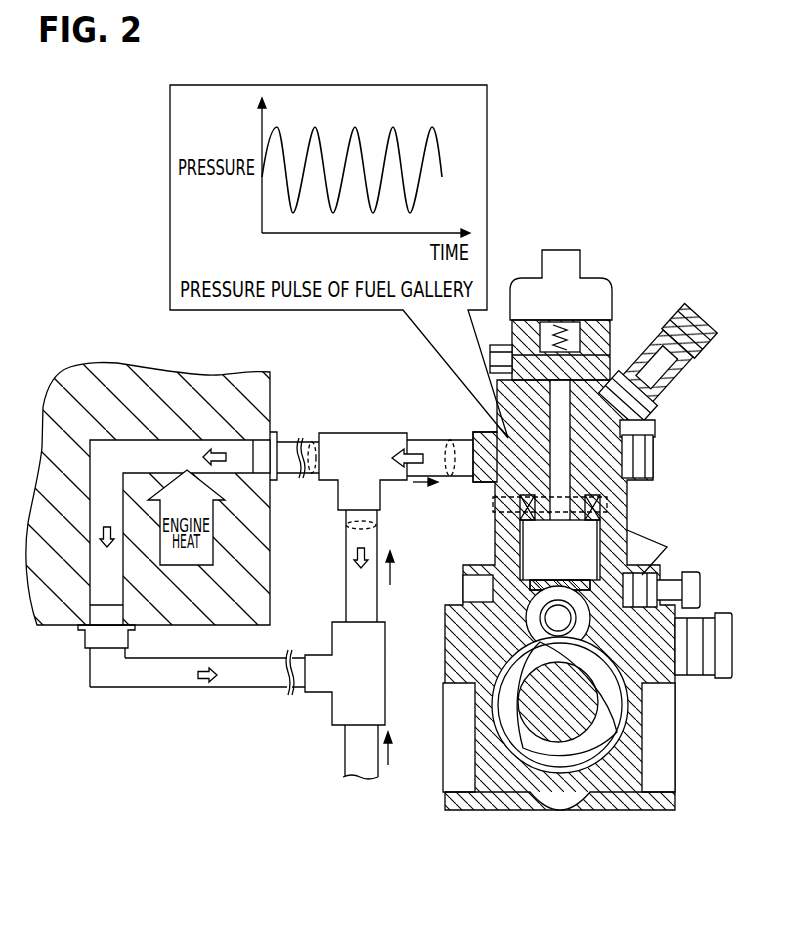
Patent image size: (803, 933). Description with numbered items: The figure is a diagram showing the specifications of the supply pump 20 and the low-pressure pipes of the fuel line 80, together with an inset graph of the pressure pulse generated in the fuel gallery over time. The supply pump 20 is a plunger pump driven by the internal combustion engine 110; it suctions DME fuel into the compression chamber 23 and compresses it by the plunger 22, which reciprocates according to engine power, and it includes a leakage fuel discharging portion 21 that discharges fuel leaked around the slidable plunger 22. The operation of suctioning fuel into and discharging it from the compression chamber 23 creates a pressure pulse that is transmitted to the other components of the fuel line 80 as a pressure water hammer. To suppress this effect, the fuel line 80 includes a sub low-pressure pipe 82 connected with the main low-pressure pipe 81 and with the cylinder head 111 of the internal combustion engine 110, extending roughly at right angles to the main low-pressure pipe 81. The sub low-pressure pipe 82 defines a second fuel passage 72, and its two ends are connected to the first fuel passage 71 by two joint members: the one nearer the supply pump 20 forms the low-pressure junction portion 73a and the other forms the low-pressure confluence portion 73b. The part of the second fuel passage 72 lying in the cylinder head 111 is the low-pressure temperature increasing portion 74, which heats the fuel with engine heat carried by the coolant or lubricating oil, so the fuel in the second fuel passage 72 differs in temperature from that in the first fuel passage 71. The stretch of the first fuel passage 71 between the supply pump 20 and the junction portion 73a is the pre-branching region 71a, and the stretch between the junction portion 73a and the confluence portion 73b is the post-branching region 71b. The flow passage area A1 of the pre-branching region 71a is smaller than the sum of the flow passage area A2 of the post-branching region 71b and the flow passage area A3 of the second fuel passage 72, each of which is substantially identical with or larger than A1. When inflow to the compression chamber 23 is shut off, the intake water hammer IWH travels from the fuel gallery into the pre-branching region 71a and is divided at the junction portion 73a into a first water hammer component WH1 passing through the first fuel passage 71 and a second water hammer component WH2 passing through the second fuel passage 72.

The supply pump 20 is at (587, 527).
The leakage fuel discharging portion 21 is at (655, 453).
The plunger 22 is at (655, 437).
The compression chamber 23 is at (625, 413).
The low-pressure temperature increasing portion 74 is at (62, 466).
The fuel line 80 is at (262, 590).
The internal combustion engine 110 is at (219, 493).
The cylinder head 111 is at (198, 540).
The first fuel passage 71 is at (319, 752).
The main low-pressure pipe 81 is at (345, 750).
The pre-branching region 71a is at (421, 438).
The post-branching region 71b is at (377, 605).
The second fuel passage 72 is at (166, 675).
The sub low-pressure pipe 82 is at (90, 675).
The low-pressure junction portion 73a is at (357, 445).
The low-pressure confluence portion 73b is at (370, 676).
The first water hammer component WH1 is at (352, 555).
The second water hammer component WH2 is at (223, 448).
The intake water hammer IWH is at (395, 470).
The flow passage area in the pre-branching region A1 is at (452, 478).
The flow passage area in the post-branching region A2 is at (378, 526).
The flow passage area of the second fuel passage A3 is at (312, 478).